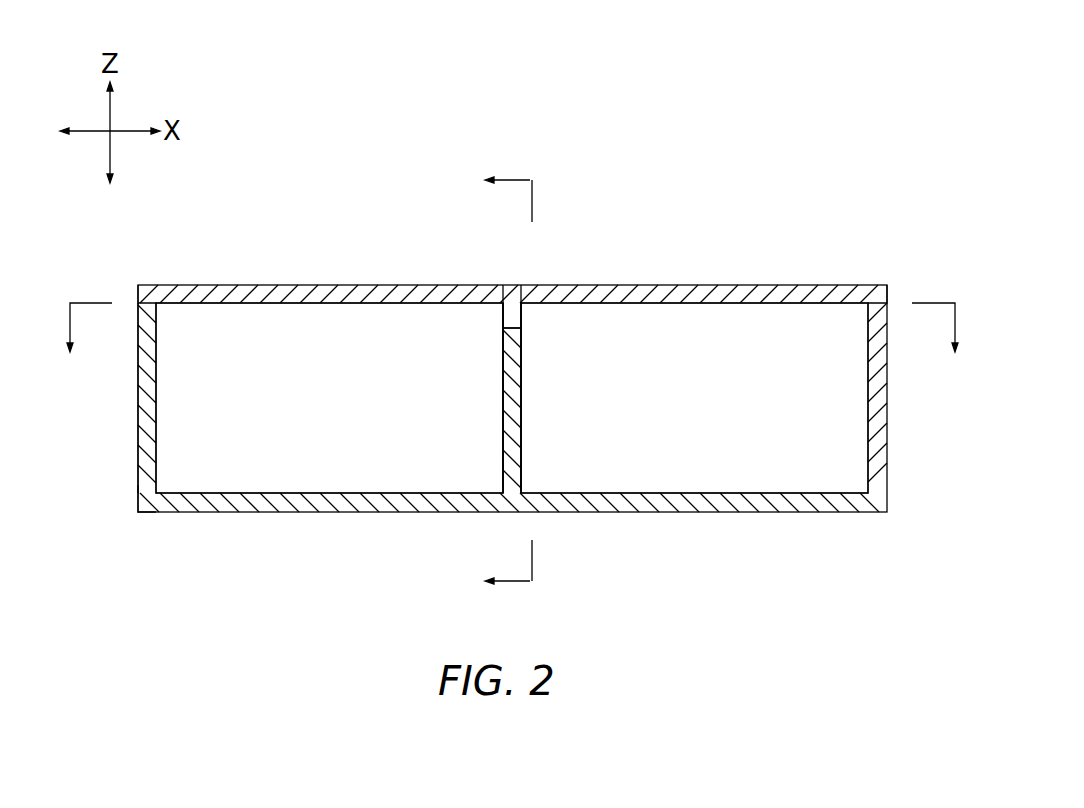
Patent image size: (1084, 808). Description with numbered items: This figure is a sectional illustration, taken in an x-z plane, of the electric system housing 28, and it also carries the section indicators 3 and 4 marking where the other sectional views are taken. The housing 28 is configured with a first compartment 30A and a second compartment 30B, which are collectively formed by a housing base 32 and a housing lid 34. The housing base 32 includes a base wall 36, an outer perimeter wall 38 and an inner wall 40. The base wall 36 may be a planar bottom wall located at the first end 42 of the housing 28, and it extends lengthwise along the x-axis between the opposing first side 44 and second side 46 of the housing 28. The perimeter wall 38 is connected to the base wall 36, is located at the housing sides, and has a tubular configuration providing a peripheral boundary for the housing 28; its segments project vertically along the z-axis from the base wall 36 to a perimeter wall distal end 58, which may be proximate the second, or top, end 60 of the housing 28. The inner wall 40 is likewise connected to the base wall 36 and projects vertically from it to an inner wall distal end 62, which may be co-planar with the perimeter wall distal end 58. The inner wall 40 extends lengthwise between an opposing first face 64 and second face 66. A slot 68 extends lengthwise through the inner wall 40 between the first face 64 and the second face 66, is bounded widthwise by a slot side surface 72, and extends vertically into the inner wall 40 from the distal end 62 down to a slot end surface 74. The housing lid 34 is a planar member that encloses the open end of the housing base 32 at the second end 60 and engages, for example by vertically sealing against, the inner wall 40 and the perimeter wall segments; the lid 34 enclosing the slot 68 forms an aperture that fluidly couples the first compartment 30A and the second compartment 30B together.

The electric system housing 28 is at (841, 207).
The first compartment 30A is at (294, 426).
The second compartment 30B is at (681, 419).
The housing base 32 is at (128, 452).
The housing lid 34 is at (266, 277).
The base wall 36 is at (308, 521).
The outer perimeter wall 38 is at (130, 405).
The inner wall 40 is at (528, 394).
The first end 42 is at (660, 514).
The first side 44 is at (137, 488).
The second side 46 is at (887, 488).
The perimeter wall distal end 58 is at (150, 285).
The second end 60 is at (644, 285).
The inner wall distal end 62 is at (512, 286).
The inner wall first face 64 is at (503, 435).
The inner wall second face 66 is at (521, 452).
The slot 68 is at (523, 314).
The slot side surface 72 is at (505, 314).
The slot end surface 74 is at (502, 318).
The section line 3- 3 is at (513, 344).
The section line 4- 4 is at (497, 381).